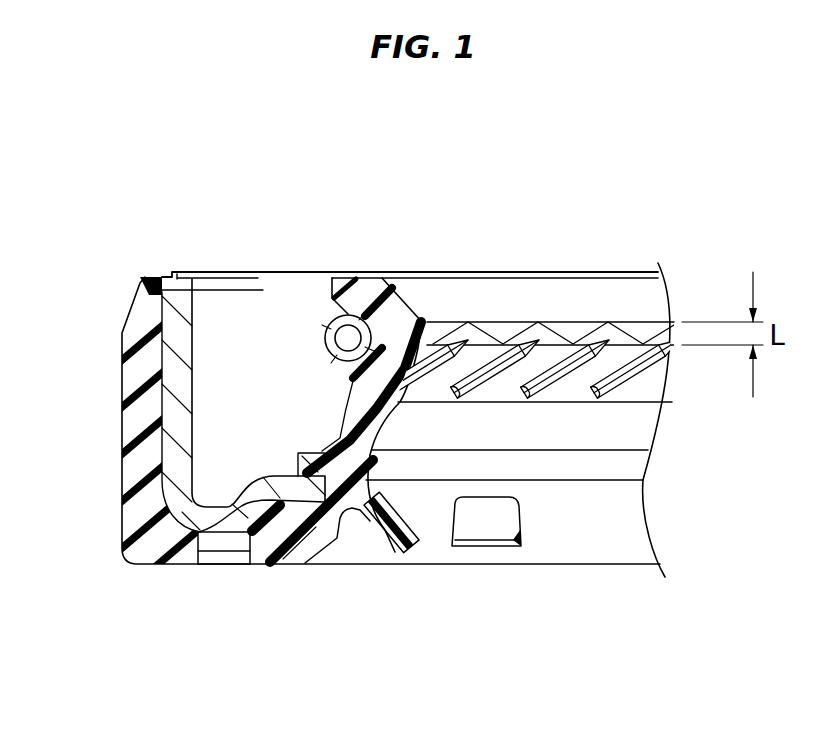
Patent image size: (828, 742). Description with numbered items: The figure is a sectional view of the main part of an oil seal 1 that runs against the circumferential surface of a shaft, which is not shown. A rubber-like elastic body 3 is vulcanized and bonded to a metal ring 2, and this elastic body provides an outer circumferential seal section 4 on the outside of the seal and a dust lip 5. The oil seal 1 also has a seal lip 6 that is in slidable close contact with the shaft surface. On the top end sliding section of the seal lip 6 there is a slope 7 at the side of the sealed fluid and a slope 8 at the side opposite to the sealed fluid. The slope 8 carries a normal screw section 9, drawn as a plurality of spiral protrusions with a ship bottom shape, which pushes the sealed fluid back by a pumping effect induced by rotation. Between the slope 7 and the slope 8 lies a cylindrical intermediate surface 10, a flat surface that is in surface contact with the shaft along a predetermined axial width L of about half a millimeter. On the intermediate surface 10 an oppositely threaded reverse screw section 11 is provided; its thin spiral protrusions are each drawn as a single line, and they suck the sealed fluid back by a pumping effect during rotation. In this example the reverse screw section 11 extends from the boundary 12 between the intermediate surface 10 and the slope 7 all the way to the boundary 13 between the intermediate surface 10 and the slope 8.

The oil seal 1 is at (158, 240).
The metal ring 2 is at (220, 518).
The rubber-like elastic body 3 is at (270, 533).
The outer circumferential seal section 4 is at (136, 388).
The dust lip 5 is at (383, 524).
The seal lip 6 is at (365, 295).
The slope at the side of sealed fluid 7 is at (425, 290).
The slope at the side opposite to the sealed fluid 8 is at (418, 378).
The normal screw section 9 is at (565, 380).
The intermediate surface 10 is at (430, 327).
The reverse screw section 11 is at (560, 333).
The boundary between the intermediate surface and the slope at the side of the seale 12 is at (627, 322).
The boundary between the intermediate surface and the slope at the side opposite to 13 is at (617, 347).